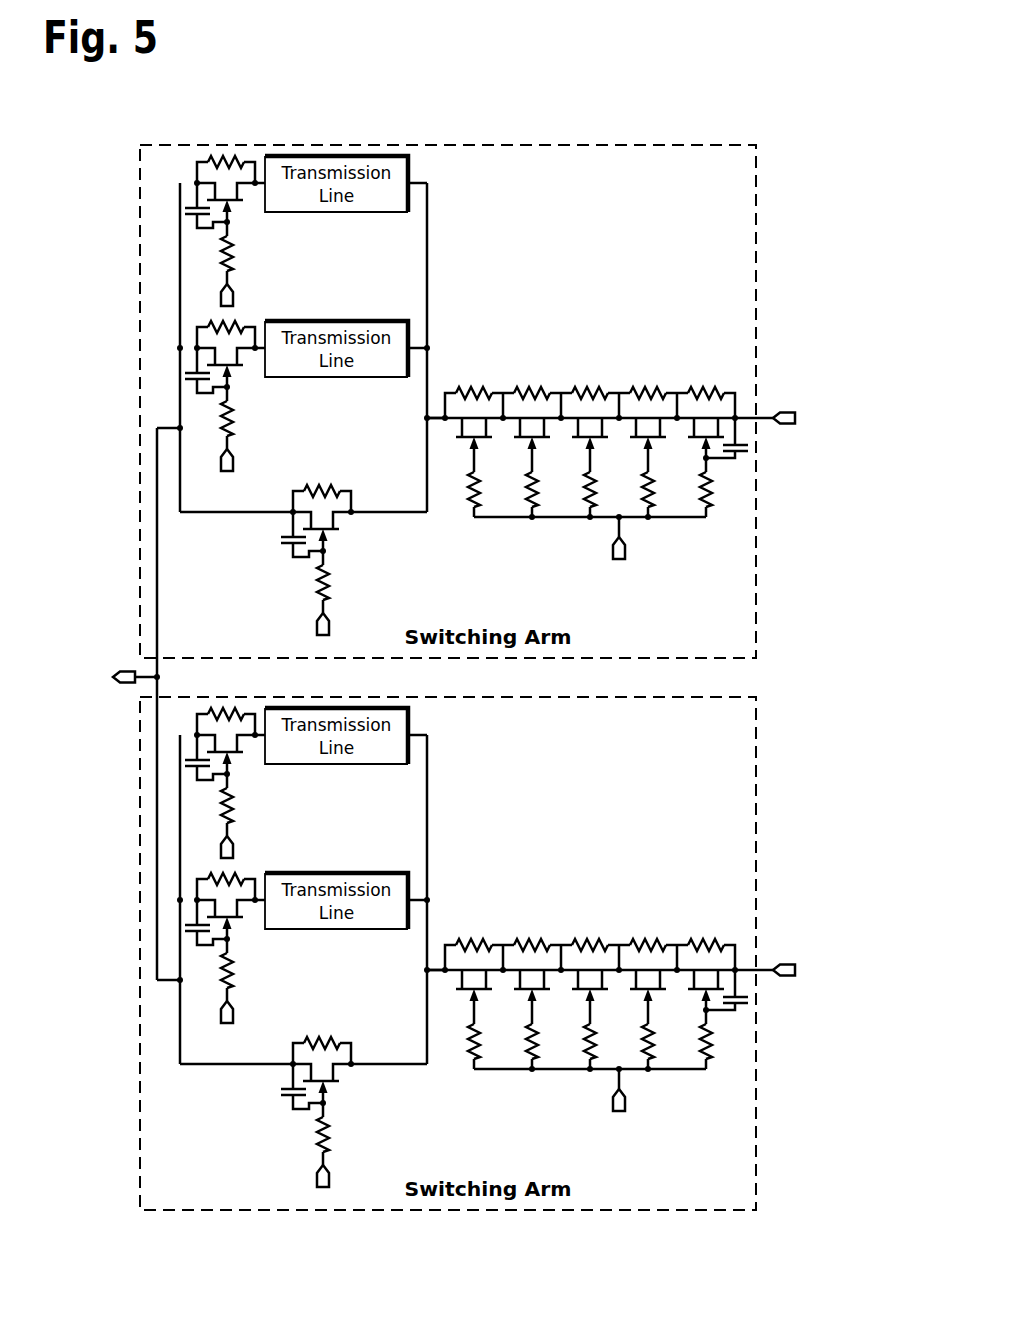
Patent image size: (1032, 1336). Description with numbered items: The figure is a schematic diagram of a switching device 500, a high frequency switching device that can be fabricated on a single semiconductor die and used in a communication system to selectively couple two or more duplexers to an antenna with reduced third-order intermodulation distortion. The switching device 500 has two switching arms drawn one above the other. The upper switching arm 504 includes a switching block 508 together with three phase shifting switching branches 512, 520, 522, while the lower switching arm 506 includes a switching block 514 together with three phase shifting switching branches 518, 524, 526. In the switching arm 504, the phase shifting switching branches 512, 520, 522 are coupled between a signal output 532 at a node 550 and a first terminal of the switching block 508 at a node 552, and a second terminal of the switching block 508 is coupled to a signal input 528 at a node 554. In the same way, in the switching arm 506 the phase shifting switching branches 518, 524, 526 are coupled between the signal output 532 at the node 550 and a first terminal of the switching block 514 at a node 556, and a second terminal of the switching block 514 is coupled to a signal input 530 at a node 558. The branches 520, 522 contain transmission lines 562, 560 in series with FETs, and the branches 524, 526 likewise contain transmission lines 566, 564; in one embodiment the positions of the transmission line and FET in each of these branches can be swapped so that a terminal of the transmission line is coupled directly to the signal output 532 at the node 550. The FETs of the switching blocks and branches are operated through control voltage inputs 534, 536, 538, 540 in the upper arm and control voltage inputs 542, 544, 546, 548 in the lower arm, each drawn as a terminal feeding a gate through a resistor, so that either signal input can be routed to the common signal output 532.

The switching device 500 is at (827, 103).
The switching arm 504 is at (436, 145).
The switching arm 506 is at (448, 975).
The switching block 508 is at (679, 318).
The phase shifting switching branch 512 is at (405, 545).
The switching block 514 is at (582, 942).
The phase shifting switching branch 518 is at (321, 1107).
The phase shifting switching branch 520 is at (462, 189).
The phase shifting switching branch 522 is at (462, 339).
The phase shifting switching branch 524 is at (401, 727).
The phase shifting switching branch 526 is at (401, 877).
The signal input 528 is at (788, 424).
The signal input 530 is at (783, 997).
The signal output 532 is at (117, 671).
The control voltage input 534 is at (613, 550).
The control voltage input 536 is at (317, 626).
The control voltage input 538 is at (233, 459).
The control voltage input 540 is at (233, 292).
The control voltage input 542 is at (590, 1088).
The control voltage input 544 is at (297, 1112).
The control voltage input 546 is at (247, 951).
The control voltage input 548 is at (247, 785).
The node 550 is at (160, 677).
The node 552 is at (427, 418).
The node 554 is at (737, 418).
The node 556 is at (396, 987).
The node 558 is at (727, 954).
The transmission line 560 is at (308, 378).
The transmission line 562 is at (308, 213).
The transmission line 564 is at (336, 927).
The transmission line 566 is at (336, 762).